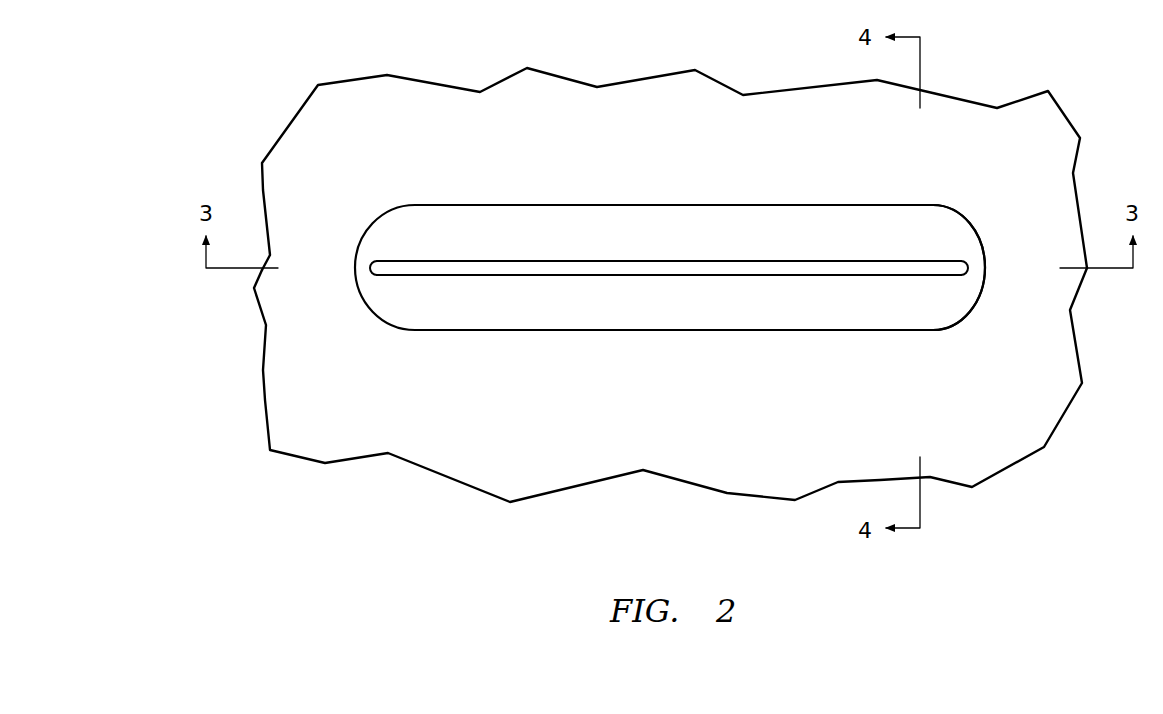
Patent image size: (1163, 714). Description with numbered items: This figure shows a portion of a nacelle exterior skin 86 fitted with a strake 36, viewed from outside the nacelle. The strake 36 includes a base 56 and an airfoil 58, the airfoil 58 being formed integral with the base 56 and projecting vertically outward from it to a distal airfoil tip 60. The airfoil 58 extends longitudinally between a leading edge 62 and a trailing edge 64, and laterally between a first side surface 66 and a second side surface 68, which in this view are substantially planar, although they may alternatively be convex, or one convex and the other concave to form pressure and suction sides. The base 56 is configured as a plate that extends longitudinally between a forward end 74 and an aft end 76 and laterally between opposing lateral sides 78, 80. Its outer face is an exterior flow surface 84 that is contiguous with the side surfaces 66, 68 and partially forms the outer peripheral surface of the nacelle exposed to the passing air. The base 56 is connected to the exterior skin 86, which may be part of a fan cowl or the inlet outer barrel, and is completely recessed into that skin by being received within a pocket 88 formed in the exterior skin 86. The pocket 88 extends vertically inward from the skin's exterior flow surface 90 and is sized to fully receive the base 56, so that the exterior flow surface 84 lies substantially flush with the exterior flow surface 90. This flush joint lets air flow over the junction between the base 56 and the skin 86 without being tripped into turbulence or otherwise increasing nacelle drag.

The strake 36 is at (658, 273).
The base 56 is at (960, 212).
The airfoil 58 is at (890, 279).
The distal airfoil tip 60 is at (510, 275).
The leading edge 62 is at (367, 268).
The trailing edge 64 is at (982, 272).
The first side surface 66 is at (680, 265).
The second side surface 68 is at (672, 275).
The forward end 74 is at (357, 287).
The aft end 76 is at (984, 267).
The lateral side 78 is at (452, 205).
The lateral side 80 is at (437, 330).
The exterior flow surface 84 is at (572, 235).
The exterior skin 86 is at (372, 462).
The pocket 88 is at (590, 334).
The exterior flow surface 90 is at (670, 277).